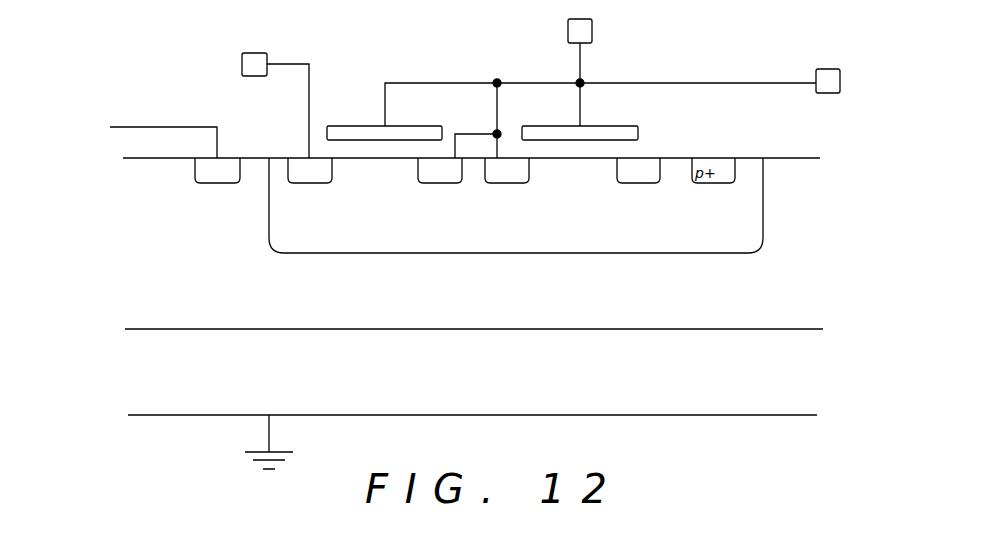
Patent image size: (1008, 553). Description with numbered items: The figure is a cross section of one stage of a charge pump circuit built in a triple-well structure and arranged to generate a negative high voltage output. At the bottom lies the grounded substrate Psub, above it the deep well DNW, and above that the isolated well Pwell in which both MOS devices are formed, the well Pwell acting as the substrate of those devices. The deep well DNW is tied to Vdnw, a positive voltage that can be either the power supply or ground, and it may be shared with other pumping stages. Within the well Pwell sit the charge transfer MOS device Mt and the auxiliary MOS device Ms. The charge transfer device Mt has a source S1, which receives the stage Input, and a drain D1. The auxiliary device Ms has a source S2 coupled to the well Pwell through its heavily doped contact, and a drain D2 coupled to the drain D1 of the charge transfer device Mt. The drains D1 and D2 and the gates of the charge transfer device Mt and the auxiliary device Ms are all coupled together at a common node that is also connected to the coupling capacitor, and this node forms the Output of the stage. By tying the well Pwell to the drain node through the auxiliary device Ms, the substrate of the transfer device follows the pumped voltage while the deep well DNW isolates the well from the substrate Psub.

The deep N-well voltage Vdnw is at (160, 145).
The input Input is at (269, 90).
The source of charge transfer MOS device S1 is at (310, 184).
The charge transfer MOS device Mt is at (571, 137).
The drain of charge transfer MOS device D1 is at (457, 172).
The drain of auxiliary MOS device D2 is at (507, 144).
The auxiliary MOS device Ms is at (580, 105).
The source of auxiliary MOS device S2 is at (638, 184).
The output Output is at (828, 63).
The P-well Pwell is at (516, 205).
The deep N-well DNW is at (474, 314).
The P-substrate Psub is at (472, 427).